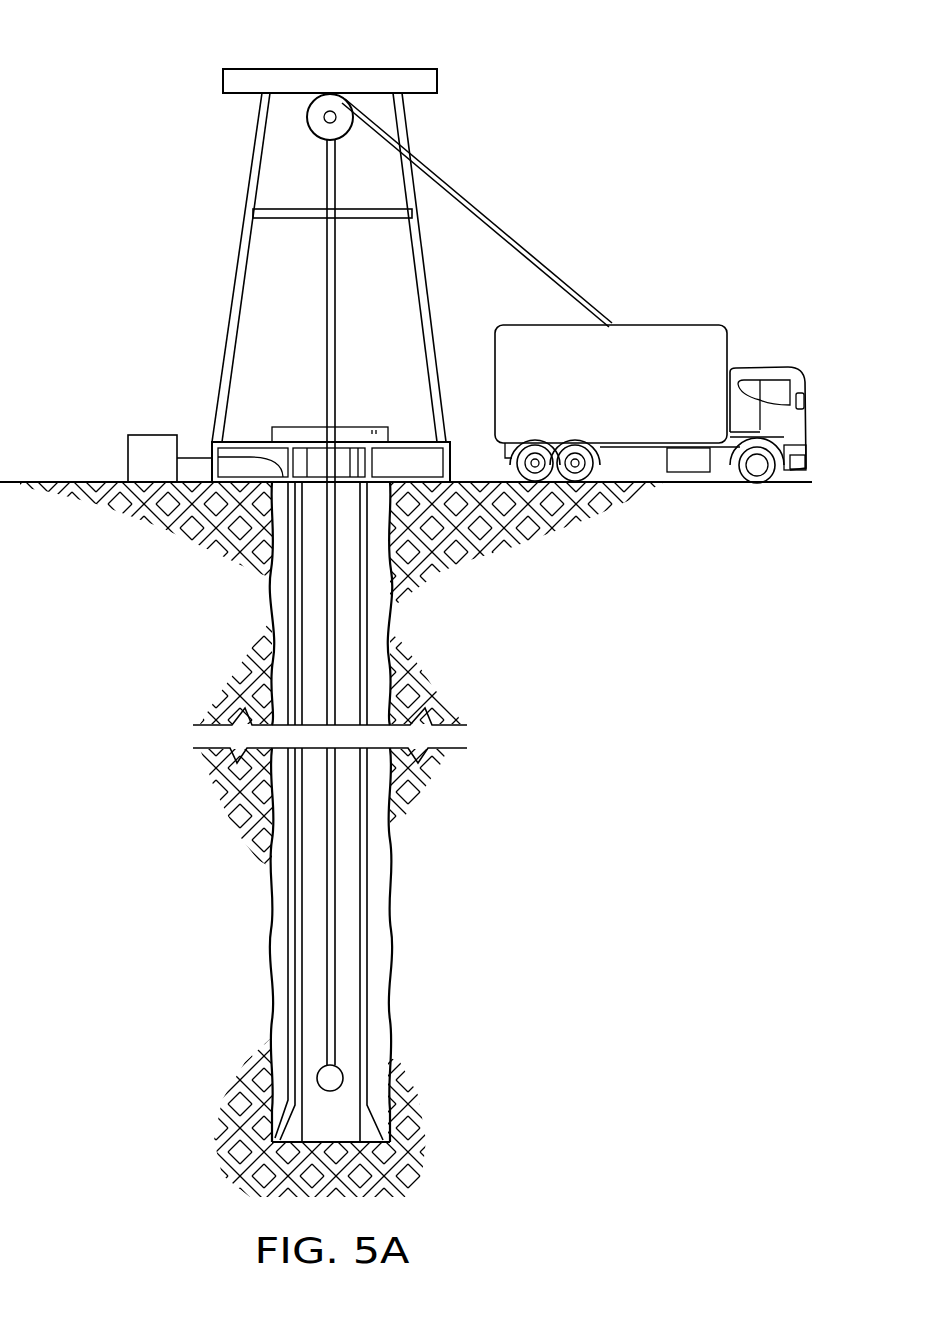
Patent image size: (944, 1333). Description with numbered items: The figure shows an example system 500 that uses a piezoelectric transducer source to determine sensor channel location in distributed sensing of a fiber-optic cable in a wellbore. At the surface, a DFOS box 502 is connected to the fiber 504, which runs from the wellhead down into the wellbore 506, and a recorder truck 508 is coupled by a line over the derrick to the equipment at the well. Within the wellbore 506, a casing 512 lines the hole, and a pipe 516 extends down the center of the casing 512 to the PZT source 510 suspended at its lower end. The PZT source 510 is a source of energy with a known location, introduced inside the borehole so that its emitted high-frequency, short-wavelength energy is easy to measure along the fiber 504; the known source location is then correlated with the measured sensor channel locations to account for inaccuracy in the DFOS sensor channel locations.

The well system with derrick 500 is at (101, 53).
The DFOS box 502 is at (152, 435).
The fiber 504 is at (288, 963).
The wellbore 506 is at (395, 896).
The recorder truck 508 is at (648, 325).
The piezoelectric transducer (PZT) source 510 is at (343, 1078).
The casing 512 is at (367, 980).
The pipe 516 is at (374, 857).